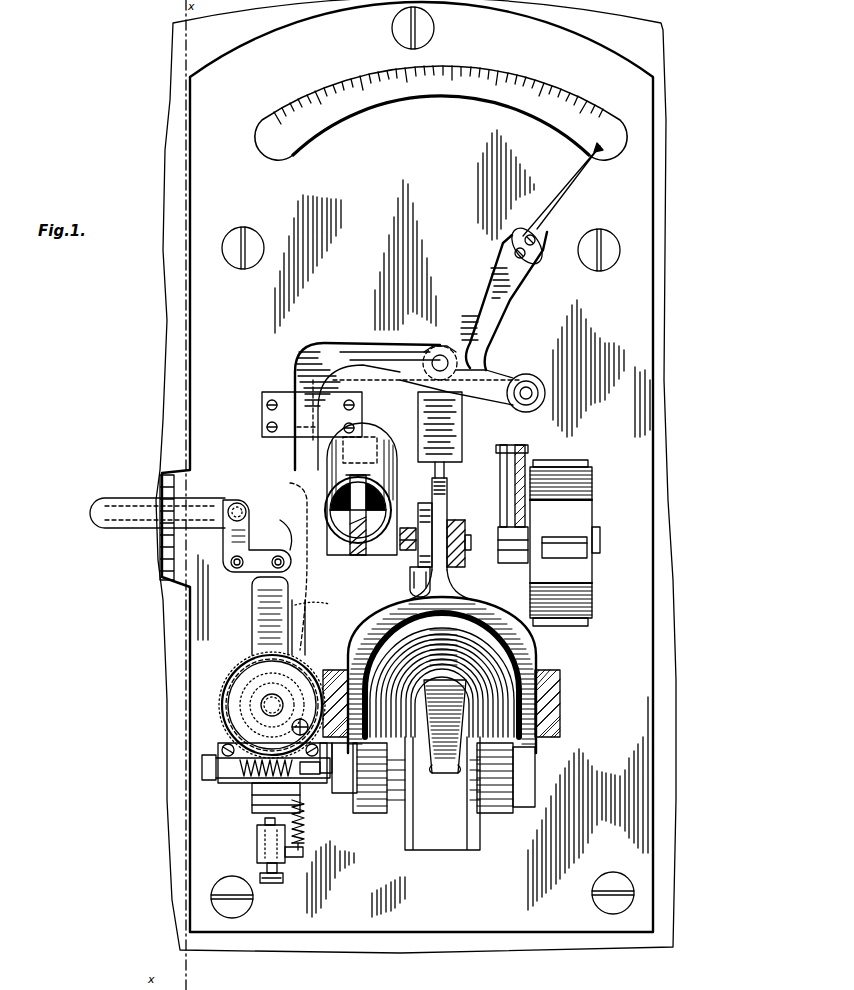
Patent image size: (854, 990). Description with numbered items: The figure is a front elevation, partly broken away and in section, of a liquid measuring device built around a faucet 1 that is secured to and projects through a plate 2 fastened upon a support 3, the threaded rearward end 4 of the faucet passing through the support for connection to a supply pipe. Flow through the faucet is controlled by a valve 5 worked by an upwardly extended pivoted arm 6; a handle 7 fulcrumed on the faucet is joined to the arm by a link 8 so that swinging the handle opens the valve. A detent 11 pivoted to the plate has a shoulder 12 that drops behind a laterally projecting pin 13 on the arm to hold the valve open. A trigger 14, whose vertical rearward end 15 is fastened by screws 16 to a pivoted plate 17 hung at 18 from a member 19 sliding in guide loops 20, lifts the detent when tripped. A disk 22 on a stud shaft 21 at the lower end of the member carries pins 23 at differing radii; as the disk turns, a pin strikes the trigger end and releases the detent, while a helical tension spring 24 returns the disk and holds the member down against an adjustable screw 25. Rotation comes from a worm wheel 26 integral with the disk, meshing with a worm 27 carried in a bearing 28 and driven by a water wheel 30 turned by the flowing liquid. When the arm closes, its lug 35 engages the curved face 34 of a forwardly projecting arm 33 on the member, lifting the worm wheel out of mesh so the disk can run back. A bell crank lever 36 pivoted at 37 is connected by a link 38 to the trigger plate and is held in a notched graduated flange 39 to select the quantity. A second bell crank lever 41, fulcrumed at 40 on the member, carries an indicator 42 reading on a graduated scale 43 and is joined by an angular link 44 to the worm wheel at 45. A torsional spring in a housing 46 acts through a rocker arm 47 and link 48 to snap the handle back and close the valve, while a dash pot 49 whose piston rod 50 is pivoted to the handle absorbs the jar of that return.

The faucet 1 is at (460, 837).
The plate 2 is at (625, 323).
The support 3 is at (668, 232).
The rearward end 4 is at (517, 785).
The valve 5 is at (500, 684).
The arm 6 is at (458, 602).
The handle 7 is at (470, 767).
The link 8 is at (457, 558).
The detent 11 is at (425, 504).
The shoulder 12 is at (418, 528).
The pin 13 is at (417, 567).
The trigger 14 is at (406, 542).
The rearward end 15 is at (290, 612).
The screws 16 is at (320, 604).
The plate 17 is at (283, 530).
The pivot 18 is at (290, 484).
The member 19 is at (295, 364).
The guide loops 20 is at (262, 420).
The stud shaft 21 is at (257, 700).
The disk 22 is at (292, 730).
The pins 23 is at (285, 860).
The helical tension spring 24 is at (302, 823).
The screw 25 is at (271, 884).
The worm wheel 26 is at (243, 681).
The worm 27 is at (252, 792).
The bearing 28 is at (210, 780).
The water wheel 30 is at (300, 778).
The arm 33 is at (443, 422).
The curved face 34 is at (446, 470).
The lug 35 is at (448, 495).
The bell crank lever 36 is at (224, 532).
The pivot 37 is at (233, 503).
The link 38 is at (243, 570).
The notched graduated flange 39 is at (157, 490).
The fulcrum 40 is at (440, 355).
The bell crank lever 41 is at (494, 308).
The indicator 42 is at (556, 197).
The graduated scale 43 is at (527, 80).
The angular link 44 is at (355, 365).
The connection 45 is at (273, 694).
The housing 46 is at (563, 518).
The rocker arm 47 is at (522, 468).
The link 48 is at (520, 556).
The dash pot 49 is at (352, 468).
The piston rod 50 is at (363, 542).